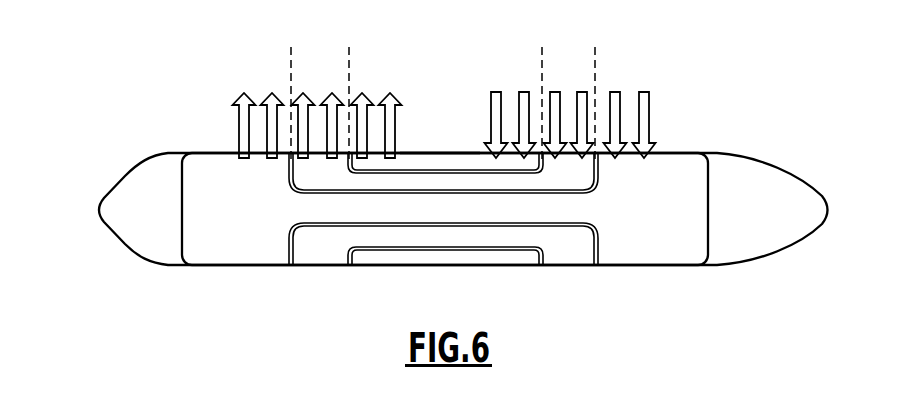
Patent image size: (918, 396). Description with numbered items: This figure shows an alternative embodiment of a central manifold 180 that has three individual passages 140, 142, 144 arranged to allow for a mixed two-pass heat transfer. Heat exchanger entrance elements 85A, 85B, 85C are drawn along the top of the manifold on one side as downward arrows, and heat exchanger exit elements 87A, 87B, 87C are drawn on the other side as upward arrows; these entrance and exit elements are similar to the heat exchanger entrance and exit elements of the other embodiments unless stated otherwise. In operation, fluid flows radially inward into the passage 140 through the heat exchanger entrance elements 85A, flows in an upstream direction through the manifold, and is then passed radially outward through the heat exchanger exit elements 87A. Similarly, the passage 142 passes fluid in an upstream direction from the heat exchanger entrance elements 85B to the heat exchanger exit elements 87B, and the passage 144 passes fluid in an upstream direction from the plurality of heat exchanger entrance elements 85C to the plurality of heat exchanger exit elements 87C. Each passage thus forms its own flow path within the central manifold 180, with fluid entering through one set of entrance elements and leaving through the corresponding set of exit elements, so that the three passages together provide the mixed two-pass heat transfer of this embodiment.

The central manifold 180 is at (168, 132).
The passage 144 is at (659, 260).
The passage 142 is at (580, 182).
The passage 140 is at (456, 150).
The heat exchanger exit elements 87A is at (403, 62).
The heat exchanger exit elements 87B is at (344, 62).
The heat exchanger exit elements 87C is at (279, 62).
The heat exchanger entrance elements 85A is at (530, 62).
The heat exchanger entrance elements 85B is at (593, 62).
The heat exchanger entrance elements 85C is at (653, 62).